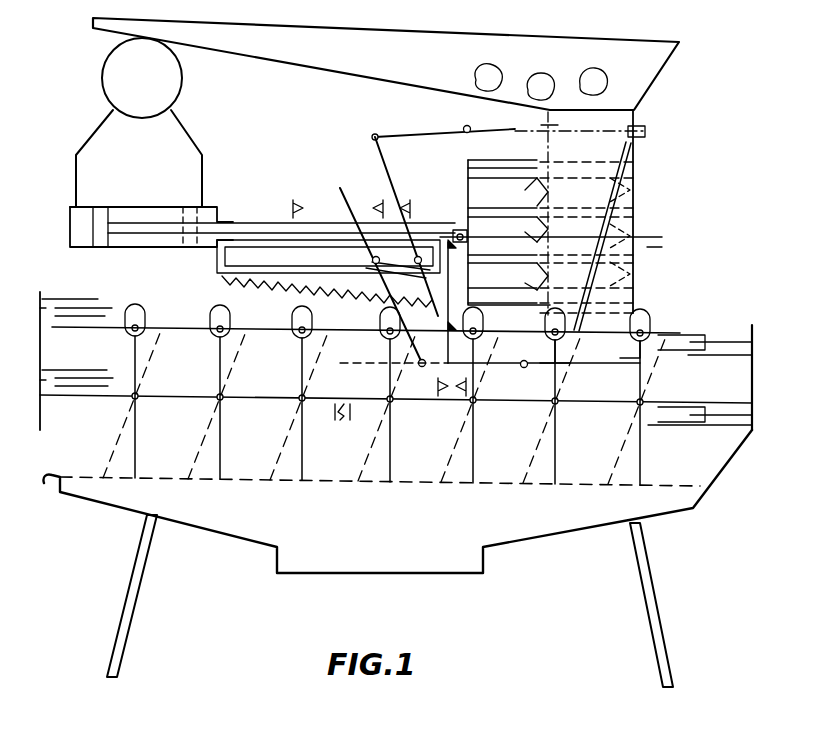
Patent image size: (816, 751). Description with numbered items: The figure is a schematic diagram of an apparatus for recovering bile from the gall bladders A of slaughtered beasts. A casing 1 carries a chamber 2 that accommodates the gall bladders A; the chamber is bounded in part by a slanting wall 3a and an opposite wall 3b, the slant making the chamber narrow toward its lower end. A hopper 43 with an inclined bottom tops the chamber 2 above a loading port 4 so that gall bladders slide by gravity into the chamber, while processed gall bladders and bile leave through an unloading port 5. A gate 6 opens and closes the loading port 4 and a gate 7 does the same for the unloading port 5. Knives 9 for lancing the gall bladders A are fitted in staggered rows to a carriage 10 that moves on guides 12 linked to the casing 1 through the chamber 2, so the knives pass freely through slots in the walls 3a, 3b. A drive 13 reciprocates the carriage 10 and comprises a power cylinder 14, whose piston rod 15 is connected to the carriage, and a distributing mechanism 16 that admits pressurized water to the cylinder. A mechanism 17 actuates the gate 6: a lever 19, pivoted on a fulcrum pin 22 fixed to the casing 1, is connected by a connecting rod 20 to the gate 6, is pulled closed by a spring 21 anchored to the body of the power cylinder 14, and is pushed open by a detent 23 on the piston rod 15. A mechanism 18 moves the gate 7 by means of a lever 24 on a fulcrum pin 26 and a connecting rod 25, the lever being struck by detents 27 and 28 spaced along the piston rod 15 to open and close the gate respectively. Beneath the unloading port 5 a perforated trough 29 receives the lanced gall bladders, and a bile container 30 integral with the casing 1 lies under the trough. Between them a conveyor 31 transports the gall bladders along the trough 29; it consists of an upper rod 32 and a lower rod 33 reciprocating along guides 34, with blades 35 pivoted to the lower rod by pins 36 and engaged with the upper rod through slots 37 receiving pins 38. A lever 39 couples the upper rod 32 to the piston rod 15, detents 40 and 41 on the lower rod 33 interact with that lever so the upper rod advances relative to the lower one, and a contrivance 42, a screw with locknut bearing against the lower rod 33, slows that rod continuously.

The casing 1 is at (726, 464).
The chamber 2 is at (636, 208).
The wall 3a is at (620, 296).
The wall 3b is at (554, 172).
The loading port 4 is at (640, 119).
The unloading port 5 is at (606, 362).
The gate 6 is at (469, 126).
The gate 7 is at (566, 364).
The knives 9 is at (486, 182).
The carriage 10 is at (466, 208).
The guides 12 is at (664, 236).
The drive 13 is at (243, 222).
The power cylinder 14 is at (138, 248).
The piston rod 15 is at (298, 235).
The distributing mechanism 16 is at (183, 78).
The mechanism 17 is at (375, 148).
The mechanism 18 is at (344, 188).
The lever 19 is at (406, 226).
The connecting rod 20 is at (412, 132).
The spring 21 is at (312, 290).
The fulcrum pin 22 is at (416, 260).
The detent 23 is at (410, 208).
The lever 24 is at (366, 248).
The connecting rod 25 is at (436, 357).
The fulcrum pin 26 is at (391, 251).
The detent 27 is at (293, 200).
The detent 28 is at (383, 202).
The perforated trough 29 is at (268, 478).
The bile container 30 is at (581, 534).
The conveyor 31 is at (168, 391).
The upper rod 32 is at (366, 342).
The lower rod 33 is at (284, 401).
The guides 34 is at (72, 298).
The blades 35 is at (305, 448).
The pin 36 is at (218, 396).
The slot 37 is at (212, 322).
The pin 38 is at (296, 324).
The lever 39 is at (430, 304).
The detent 40 is at (438, 386).
The detent 41 is at (466, 384).
The contrivance 42 is at (342, 424).
The hopper 43 is at (574, 50).
The gall bladders A is at (607, 86).